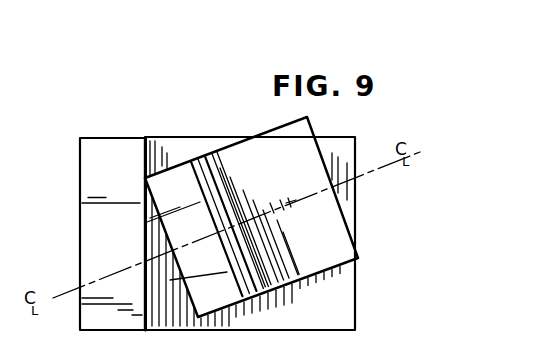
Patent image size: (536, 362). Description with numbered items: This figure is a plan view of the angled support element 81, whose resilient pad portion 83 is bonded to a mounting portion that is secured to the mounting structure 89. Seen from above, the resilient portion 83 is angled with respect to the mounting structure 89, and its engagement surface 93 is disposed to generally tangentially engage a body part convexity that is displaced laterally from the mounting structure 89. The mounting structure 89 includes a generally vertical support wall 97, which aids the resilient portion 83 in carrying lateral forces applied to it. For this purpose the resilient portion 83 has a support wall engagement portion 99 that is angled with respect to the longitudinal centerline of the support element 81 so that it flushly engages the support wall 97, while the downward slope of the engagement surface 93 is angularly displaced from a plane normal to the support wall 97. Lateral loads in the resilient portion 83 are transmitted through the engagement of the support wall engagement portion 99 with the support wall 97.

The angled support element 81 is at (252, 147).
The resilient pad portion 83 is at (214, 166).
The mounting structure 89 is at (333, 313).
The engagement surface 93 is at (323, 250).
The support wall 97 is at (105, 226).
The support wall engagement portion 99 is at (145, 200).